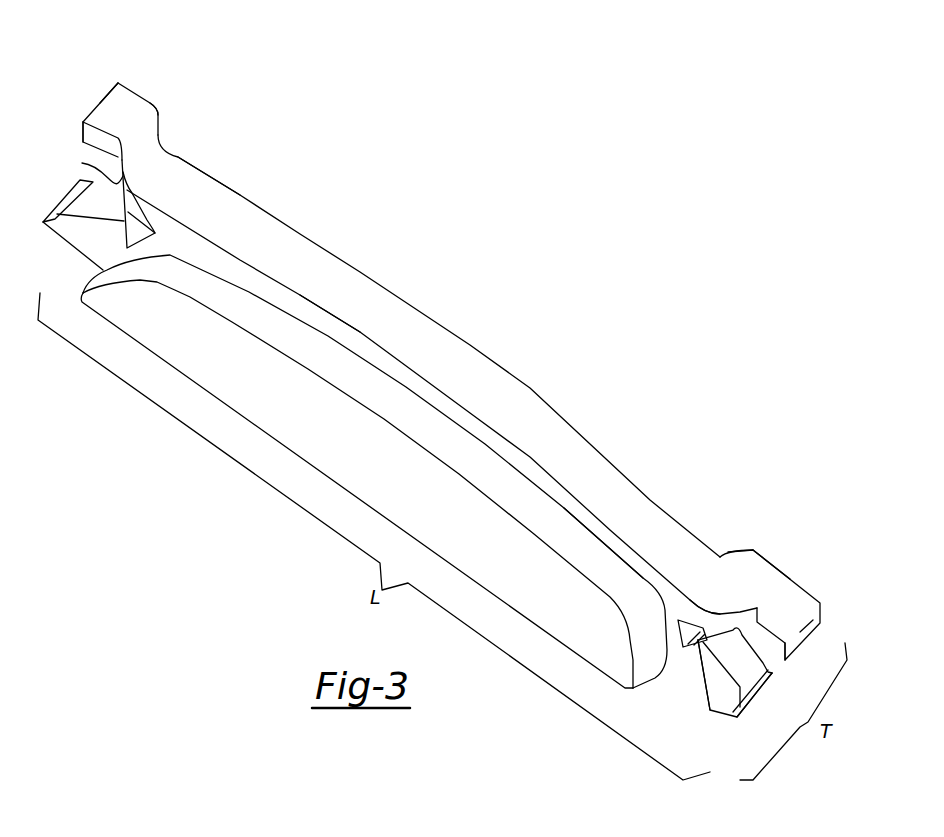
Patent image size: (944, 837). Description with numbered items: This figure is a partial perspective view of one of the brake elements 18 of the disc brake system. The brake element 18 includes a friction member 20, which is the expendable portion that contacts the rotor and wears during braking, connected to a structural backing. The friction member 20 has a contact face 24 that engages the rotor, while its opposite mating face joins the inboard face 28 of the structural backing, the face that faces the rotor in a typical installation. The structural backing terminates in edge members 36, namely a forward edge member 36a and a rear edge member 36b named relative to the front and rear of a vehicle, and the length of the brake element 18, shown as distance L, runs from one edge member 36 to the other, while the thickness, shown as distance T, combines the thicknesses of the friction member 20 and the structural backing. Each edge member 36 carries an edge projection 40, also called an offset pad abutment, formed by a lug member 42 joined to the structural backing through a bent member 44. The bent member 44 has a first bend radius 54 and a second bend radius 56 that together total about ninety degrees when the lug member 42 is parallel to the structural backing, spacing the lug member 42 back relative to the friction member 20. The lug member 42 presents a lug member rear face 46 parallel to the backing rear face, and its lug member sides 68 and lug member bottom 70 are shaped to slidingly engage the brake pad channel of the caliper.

The brake element 18 is at (442, 288).
The friction member 20 is at (647, 643).
The contact face 24 is at (413, 511).
The inboard face 28 is at (177, 236).
The edge member 36 is at (53, 148).
The forward edge member 36a is at (48, 214).
The rear edge member 36b is at (747, 728).
The edge projection 40 is at (123, 73).
The lug member 42 is at (115, 86).
The bent member 44 is at (166, 143).
The lug member rear face 46 is at (785, 568).
The first bend radius 54 is at (710, 722).
The second bend radius 56 is at (160, 114).
The lug member sides 68 is at (88, 137).
The lug member bottom 70 is at (790, 648).